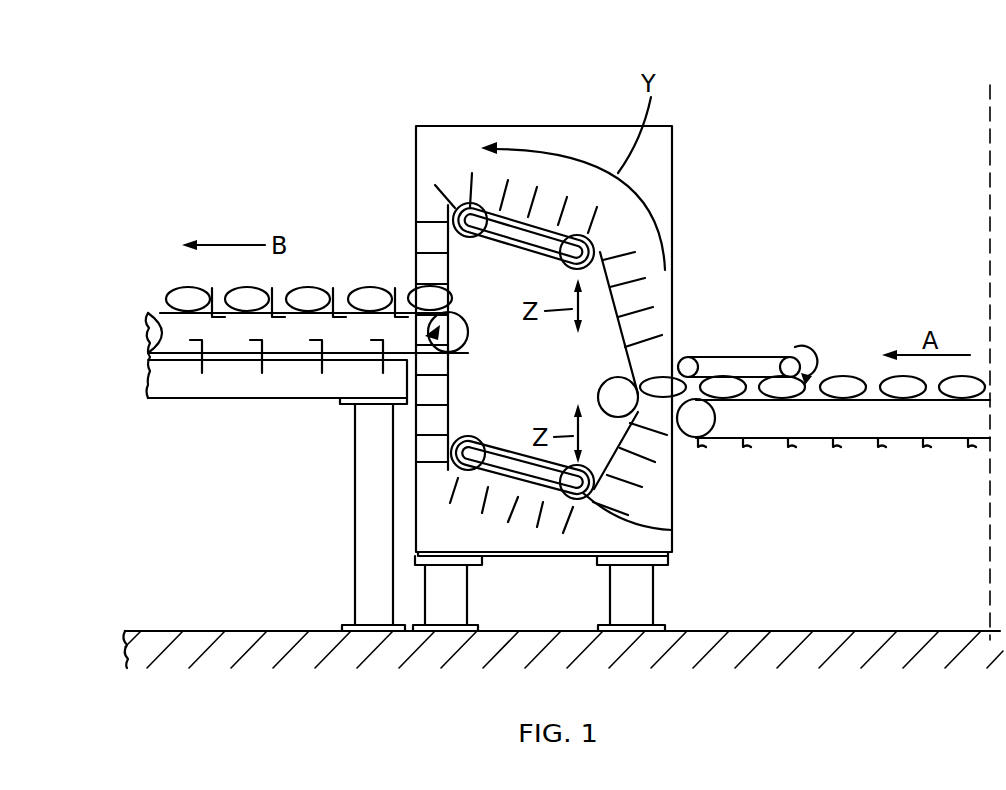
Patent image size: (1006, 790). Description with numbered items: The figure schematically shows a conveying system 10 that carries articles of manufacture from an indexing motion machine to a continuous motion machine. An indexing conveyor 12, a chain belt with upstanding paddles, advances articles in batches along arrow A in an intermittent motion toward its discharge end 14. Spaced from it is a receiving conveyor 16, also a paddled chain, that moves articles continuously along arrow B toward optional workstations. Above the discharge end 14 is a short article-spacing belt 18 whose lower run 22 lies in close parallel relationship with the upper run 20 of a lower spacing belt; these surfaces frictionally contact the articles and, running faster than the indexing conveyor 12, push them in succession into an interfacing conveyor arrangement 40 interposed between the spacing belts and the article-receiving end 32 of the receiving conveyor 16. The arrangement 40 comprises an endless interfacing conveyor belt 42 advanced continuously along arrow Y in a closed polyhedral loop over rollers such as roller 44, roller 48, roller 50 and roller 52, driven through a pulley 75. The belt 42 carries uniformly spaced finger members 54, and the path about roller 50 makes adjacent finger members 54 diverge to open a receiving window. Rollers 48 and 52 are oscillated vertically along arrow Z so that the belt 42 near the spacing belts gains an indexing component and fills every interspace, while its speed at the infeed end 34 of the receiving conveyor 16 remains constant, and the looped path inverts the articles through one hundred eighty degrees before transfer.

The conveying system 10 is at (541, 110).
The indexing conveyor 12 is at (912, 446).
The discharge end 14 is at (677, 428).
The receiving conveyor 16 is at (227, 358).
The article-spacing belt 18 is at (714, 355).
The upper run 20 is at (800, 400).
The lower run 22 is at (760, 373).
The article-receiving end 32 is at (400, 308).
The infeed end 34 is at (458, 350).
The interfacing conveyor arrangement 40 is at (685, 156).
The interfacing conveyor belt 42 is at (602, 267).
The roller 44 is at (453, 206).
The roller 48 is at (672, 530).
The roller 50 is at (597, 391).
The roller 52 is at (573, 267).
The finger members 54 is at (448, 190).
The pulley 75 is at (455, 460).